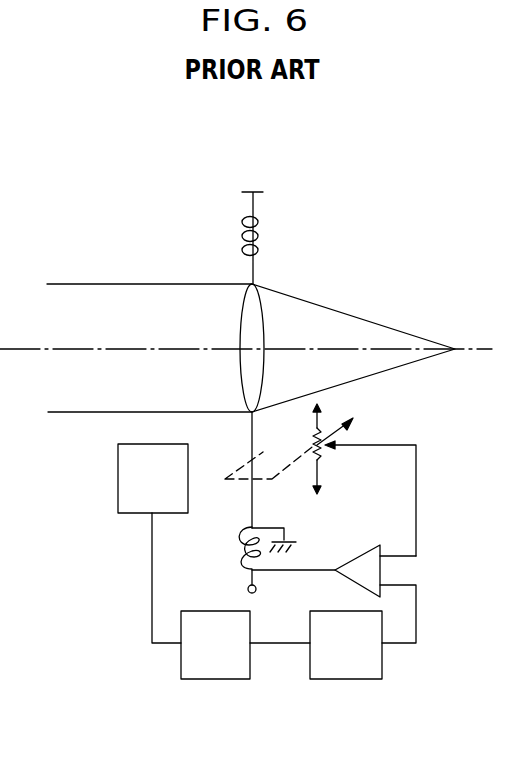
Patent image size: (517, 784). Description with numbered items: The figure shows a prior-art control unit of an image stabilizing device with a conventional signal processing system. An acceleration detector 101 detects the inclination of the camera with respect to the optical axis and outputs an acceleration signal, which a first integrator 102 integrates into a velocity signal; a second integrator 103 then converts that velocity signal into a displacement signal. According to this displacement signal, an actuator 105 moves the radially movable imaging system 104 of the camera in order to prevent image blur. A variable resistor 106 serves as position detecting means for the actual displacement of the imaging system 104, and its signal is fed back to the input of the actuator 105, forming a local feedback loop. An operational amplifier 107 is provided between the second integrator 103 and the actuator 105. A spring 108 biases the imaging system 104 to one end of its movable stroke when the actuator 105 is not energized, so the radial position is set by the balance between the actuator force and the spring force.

The acceleration detector 101 is at (118, 485).
The first integrator 102 is at (205, 679).
The second integrator 103 is at (337, 679).
The imaging system 104 is at (241, 322).
The actuator 105 is at (243, 548).
The variable resistor 106 is at (322, 452).
The operational amplifier 107 is at (358, 562).
The spring 108 is at (262, 231).